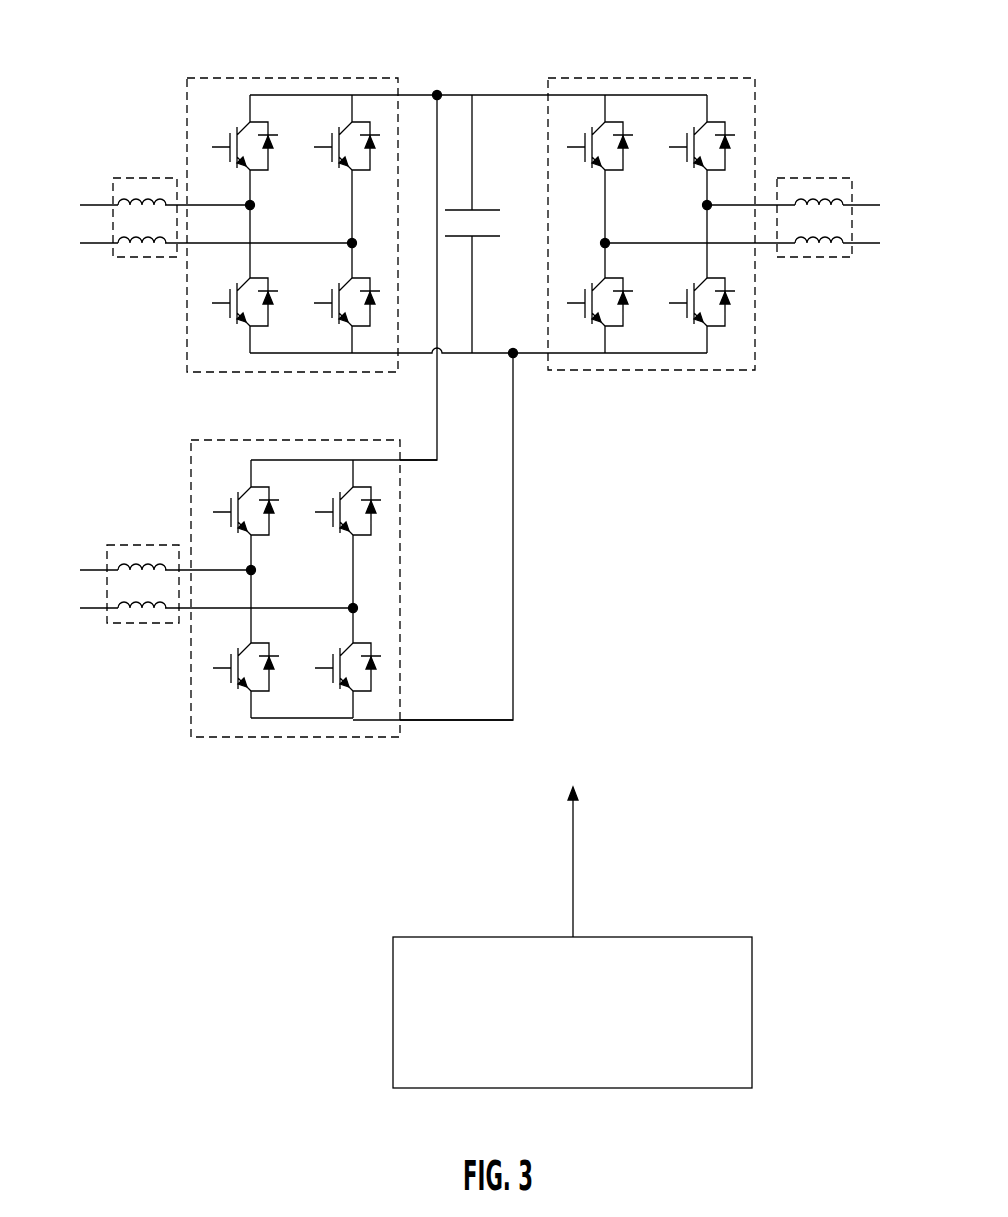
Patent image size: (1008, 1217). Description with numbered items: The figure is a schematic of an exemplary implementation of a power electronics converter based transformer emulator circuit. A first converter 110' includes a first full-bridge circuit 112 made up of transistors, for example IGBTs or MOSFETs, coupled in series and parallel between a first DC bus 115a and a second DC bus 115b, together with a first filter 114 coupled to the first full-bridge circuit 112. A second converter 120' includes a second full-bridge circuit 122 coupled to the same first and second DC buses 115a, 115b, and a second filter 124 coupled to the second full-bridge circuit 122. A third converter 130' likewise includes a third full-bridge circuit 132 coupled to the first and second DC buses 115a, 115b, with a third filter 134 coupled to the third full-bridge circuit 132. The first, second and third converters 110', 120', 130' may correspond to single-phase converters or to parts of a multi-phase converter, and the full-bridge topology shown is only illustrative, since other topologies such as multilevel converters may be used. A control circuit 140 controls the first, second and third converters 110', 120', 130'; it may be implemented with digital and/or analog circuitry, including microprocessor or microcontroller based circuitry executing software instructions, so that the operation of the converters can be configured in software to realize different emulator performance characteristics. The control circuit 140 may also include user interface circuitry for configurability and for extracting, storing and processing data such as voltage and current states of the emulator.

The first converter 110' is at (178, 287).
The first full-bridge circuit 112 is at (287, 78).
The first filter 114 is at (125, 178).
The first DC bus 115a is at (488, 95).
The second DC bus 115b is at (520, 357).
The second converter 120' is at (765, 287).
The second full-bridge circuit 122 is at (660, 78).
The second filter 124 is at (828, 178).
The third converter 130' is at (189, 646).
The third full-bridge circuit 132 is at (323, 738).
The third filter 134 is at (125, 545).
The control circuit 140 is at (408, 937).